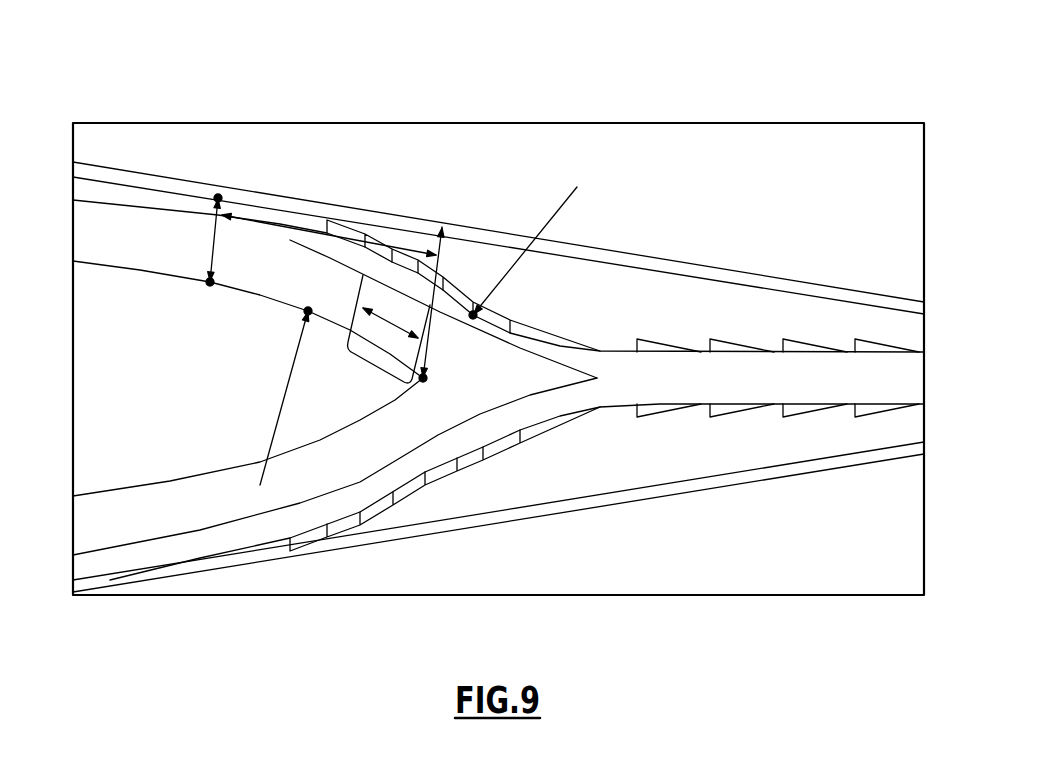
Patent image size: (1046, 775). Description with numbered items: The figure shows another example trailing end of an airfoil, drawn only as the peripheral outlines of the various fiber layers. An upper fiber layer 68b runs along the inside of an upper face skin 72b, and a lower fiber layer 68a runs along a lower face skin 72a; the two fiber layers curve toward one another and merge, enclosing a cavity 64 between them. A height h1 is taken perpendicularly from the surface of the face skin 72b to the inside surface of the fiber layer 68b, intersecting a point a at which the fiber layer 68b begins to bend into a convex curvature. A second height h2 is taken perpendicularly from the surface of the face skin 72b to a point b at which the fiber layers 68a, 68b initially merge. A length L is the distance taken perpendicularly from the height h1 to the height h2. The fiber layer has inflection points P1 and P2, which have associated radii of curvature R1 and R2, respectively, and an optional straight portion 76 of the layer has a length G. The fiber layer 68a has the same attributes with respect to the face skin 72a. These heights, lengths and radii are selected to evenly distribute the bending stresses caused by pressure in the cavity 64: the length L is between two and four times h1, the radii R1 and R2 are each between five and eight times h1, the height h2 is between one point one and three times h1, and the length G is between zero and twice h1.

The cavity 64 is at (180, 397).
The fiber layer 68a is at (318, 538).
The fiber layer 68b is at (177, 192).
The face skin 72a is at (655, 490).
The face skin 72b is at (657, 268).
The straight portion 76 is at (380, 368).
The point a is at (222, 196).
The point b is at (428, 382).
The height h1 is at (207, 257).
The height h2 is at (432, 350).
The length L is at (288, 222).
The length G is at (378, 312).
The inflection point P1 is at (308, 308).
The inflection point P2 is at (478, 313).
The radius of curvature R1 is at (266, 470).
The radius of curvature R2 is at (556, 213).